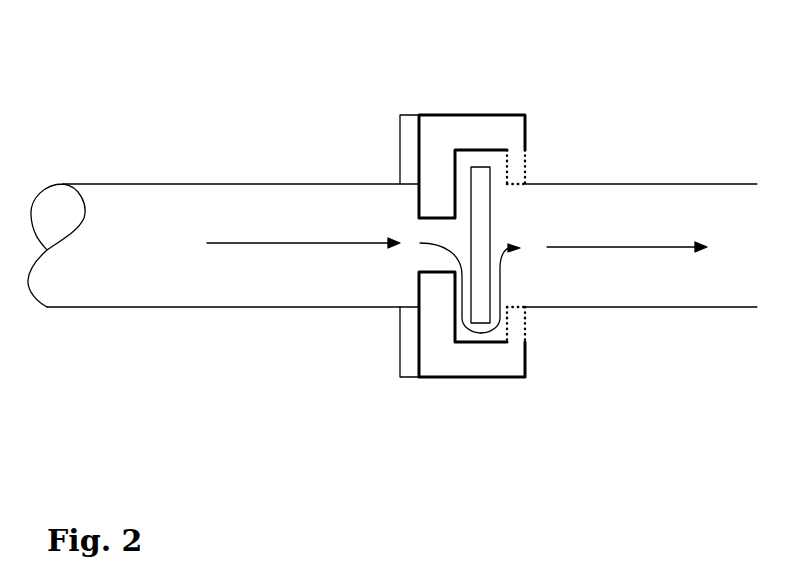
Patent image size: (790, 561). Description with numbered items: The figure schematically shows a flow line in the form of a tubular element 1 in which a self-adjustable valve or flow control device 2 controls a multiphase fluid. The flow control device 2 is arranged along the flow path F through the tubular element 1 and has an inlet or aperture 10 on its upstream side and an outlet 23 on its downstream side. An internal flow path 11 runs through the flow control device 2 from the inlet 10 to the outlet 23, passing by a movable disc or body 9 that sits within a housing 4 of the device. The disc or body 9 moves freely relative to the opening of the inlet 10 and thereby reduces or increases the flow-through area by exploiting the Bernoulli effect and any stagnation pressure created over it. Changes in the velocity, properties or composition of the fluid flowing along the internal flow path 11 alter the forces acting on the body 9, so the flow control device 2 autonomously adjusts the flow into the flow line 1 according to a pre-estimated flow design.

The tubular element 1 is at (120, 290).
The flow control device 2 is at (481, 233).
The housing 4 is at (468, 125).
The movable disc or body 9 is at (478, 200).
The inlet 10 is at (417, 253).
The internal flow path 11 is at (503, 287).
The outlet 23 is at (517, 227).
The flow path F is at (250, 243).